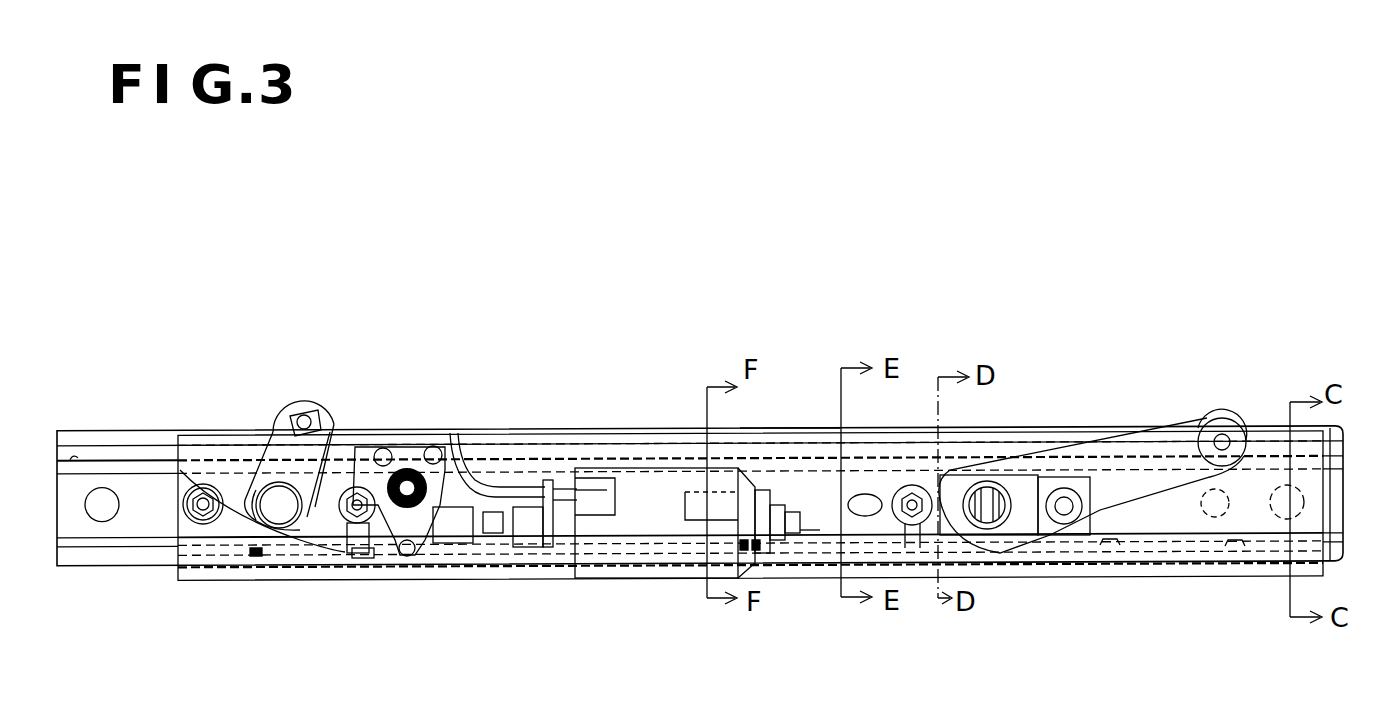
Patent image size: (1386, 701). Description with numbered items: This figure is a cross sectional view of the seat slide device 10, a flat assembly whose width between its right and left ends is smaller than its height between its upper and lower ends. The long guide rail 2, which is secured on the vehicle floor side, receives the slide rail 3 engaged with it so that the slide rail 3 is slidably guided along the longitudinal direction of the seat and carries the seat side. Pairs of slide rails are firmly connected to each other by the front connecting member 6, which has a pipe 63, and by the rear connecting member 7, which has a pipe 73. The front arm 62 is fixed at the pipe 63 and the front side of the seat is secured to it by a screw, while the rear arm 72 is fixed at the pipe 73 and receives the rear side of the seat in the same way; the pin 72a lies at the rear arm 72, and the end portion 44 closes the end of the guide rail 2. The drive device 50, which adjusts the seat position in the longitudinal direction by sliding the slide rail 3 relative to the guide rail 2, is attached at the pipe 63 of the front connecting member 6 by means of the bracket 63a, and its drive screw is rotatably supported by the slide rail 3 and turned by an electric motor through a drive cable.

The guide rail 2 is at (142, 430).
The slide rail 3 is at (218, 435).
The front connecting member 6 is at (323, 376).
The front arm 62 is at (320, 396).
The pipe 63 is at (340, 423).
The bracket 63a is at (450, 433).
The drive device 50 is at (622, 452).
The seat slide device 10 is at (770, 414).
The pipe 73 is at (986, 476).
The rear connecting member 7 is at (1065, 418).
The rear arm 72 is at (1213, 415).
The pivot pin 72a is at (1228, 436).
The end cap 44 is at (1350, 426).